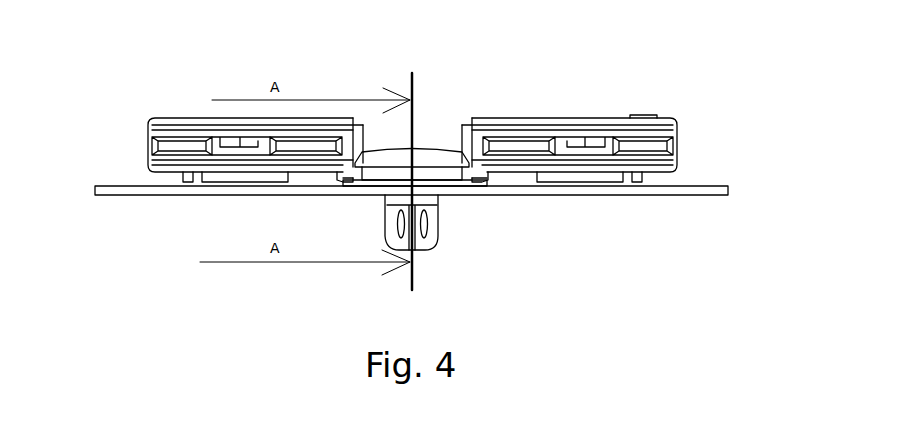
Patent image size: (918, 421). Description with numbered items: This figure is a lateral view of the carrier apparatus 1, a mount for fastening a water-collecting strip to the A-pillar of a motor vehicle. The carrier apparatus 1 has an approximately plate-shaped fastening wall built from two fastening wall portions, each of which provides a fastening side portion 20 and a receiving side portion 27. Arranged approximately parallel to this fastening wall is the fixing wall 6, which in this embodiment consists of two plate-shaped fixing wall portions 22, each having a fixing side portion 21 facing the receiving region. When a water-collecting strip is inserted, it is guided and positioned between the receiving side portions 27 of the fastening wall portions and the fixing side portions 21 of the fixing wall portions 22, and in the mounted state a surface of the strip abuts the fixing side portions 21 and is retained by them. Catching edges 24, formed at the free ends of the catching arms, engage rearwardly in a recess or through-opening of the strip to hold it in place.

The carrier apparatus 1 is at (495, 55).
The fixing wall 6 is at (297, 125).
The fastening side portion 20 is at (180, 185).
The fixing side portion 21 is at (238, 148).
The fixing wall portion 22 is at (265, 127).
The catching edge 24 is at (225, 143).
The receiving side portion 27 is at (180, 145).